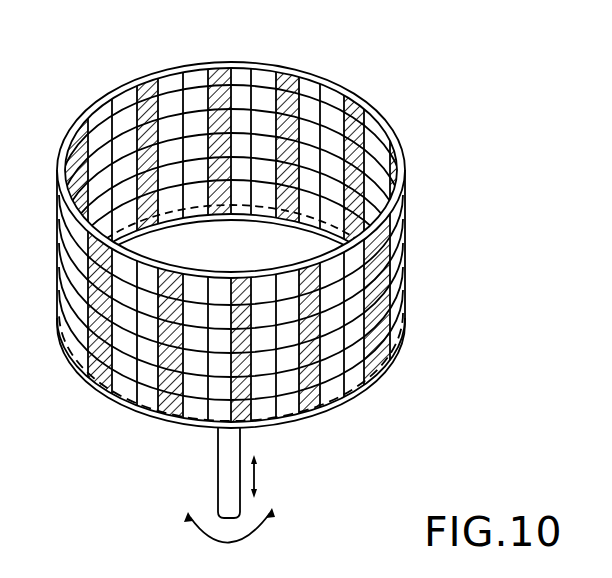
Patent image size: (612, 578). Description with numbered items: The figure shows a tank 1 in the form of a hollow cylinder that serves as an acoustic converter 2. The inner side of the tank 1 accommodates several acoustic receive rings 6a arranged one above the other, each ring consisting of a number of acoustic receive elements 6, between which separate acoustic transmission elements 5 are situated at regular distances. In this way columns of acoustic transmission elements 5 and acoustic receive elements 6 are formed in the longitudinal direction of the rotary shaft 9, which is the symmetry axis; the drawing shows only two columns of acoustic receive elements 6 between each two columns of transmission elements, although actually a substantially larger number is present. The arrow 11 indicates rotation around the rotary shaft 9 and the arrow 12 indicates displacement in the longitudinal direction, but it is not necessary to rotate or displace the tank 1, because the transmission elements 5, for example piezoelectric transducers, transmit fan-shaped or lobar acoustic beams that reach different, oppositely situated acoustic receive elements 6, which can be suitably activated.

The tank 1 is at (372, 370).
The acoustic converter 2 is at (406, 238).
The acoustic transmission element 5 is at (147, 90).
The acoustic receive element 6 is at (265, 80).
The acoustic receive ring 6a is at (341, 99).
The rotary shaft 9 is at (222, 484).
The arrow 11 is at (265, 532).
The arrow 12 is at (256, 474).